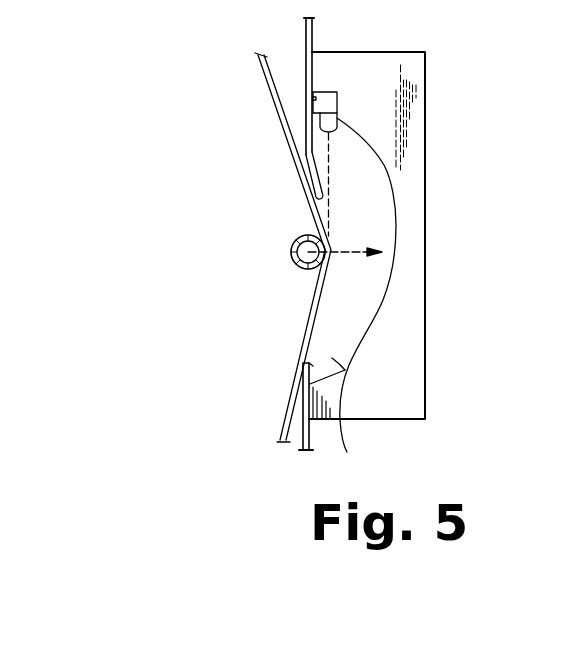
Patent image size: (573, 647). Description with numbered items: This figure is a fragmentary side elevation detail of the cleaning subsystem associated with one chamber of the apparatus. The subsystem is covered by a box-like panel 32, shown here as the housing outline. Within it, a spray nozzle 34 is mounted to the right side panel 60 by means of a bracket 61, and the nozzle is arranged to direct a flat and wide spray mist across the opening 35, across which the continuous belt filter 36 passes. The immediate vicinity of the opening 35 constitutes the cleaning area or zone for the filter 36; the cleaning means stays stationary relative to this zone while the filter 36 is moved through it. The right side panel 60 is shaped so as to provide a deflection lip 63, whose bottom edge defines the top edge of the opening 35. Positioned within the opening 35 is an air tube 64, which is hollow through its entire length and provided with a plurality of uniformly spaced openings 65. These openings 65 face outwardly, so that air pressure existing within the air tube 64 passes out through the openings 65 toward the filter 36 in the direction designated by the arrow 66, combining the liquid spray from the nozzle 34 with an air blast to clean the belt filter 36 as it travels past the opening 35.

The box-like panel 32 is at (425, 385).
The spray nozzle 34 is at (337, 114).
The opening 35 is at (339, 422).
The continuous belt filter 36 is at (275, 108).
The right side panel 60 is at (306, 42).
The bracket 61 is at (326, 92).
The deflection lip 63 is at (318, 183).
The air tube 64 is at (300, 267).
The openings 65 is at (340, 253).
The arrow 66 is at (355, 249).